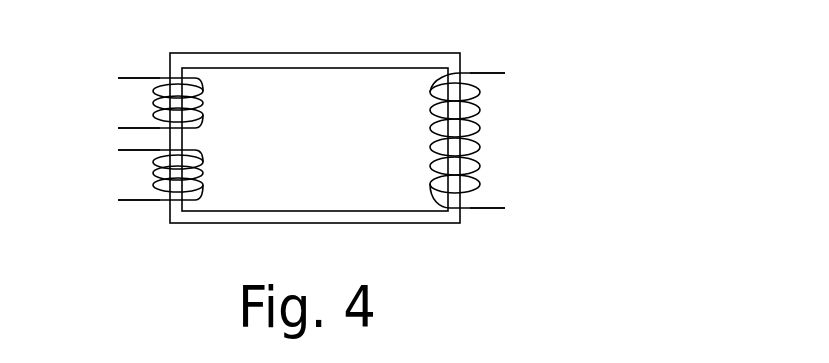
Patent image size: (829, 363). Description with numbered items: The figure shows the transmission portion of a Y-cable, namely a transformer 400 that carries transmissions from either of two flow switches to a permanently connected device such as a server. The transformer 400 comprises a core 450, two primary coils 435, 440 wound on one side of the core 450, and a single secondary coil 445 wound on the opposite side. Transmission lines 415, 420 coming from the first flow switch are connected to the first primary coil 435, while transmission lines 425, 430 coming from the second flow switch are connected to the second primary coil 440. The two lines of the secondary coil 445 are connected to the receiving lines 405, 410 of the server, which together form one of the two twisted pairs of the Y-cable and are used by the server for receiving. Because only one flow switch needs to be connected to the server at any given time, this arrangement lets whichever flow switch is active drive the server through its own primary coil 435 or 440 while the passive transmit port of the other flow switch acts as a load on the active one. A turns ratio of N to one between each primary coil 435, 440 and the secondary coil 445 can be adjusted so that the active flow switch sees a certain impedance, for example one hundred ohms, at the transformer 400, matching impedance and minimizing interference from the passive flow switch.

The transformer 400 is at (389, 143).
The communication line 405 is at (482, 73).
The communication line 410 is at (488, 210).
The communication line 415 is at (130, 78).
The communication line 420 is at (130, 128).
The communication line 425 is at (128, 150).
The communication line 430 is at (128, 200).
The primary coil 435 is at (203, 86).
The primary coil 440 is at (200, 176).
The secondary coil 445 is at (432, 88).
The core 450 is at (285, 53).